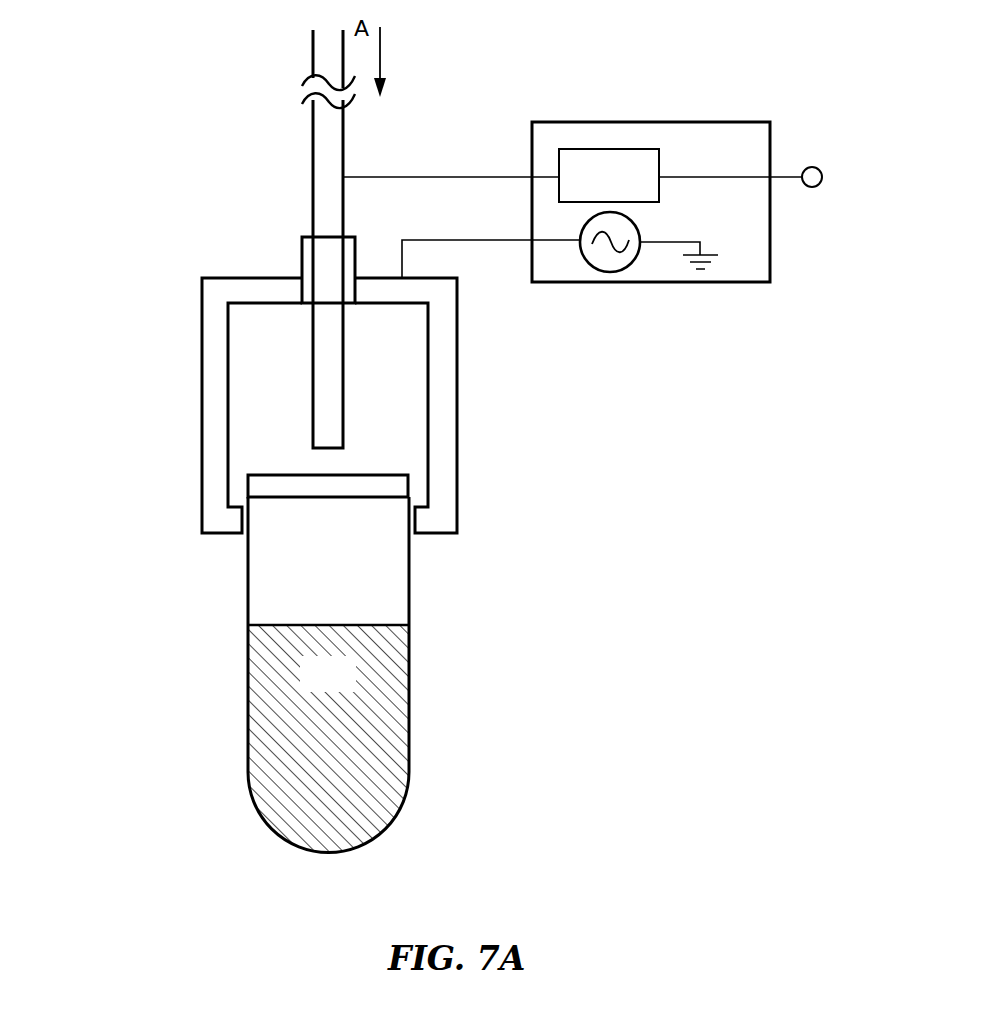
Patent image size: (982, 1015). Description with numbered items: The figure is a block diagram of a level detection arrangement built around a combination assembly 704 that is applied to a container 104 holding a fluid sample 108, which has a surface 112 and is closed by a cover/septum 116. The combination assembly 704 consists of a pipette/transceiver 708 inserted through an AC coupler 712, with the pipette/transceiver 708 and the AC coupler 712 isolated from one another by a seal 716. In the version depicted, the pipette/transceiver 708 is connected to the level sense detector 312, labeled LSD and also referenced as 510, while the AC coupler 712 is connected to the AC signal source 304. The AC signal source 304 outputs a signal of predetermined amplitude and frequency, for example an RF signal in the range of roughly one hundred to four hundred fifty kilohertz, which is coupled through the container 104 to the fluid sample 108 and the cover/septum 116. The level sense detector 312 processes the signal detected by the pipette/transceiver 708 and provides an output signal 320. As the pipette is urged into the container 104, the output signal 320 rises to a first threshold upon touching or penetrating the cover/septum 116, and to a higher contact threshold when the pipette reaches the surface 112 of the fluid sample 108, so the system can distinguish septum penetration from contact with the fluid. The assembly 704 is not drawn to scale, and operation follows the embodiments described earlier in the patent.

The container 104 is at (248, 724).
The fluid sample 108 is at (351, 688).
The surface of the fluid sample 112 is at (273, 622).
The cover/septum 116 is at (275, 475).
The AC signal source 304 is at (635, 219).
The level sense detector 312 is at (609, 148).
The level sensing device (LSD) 510 is at (609, 175).
The output signal 320 is at (814, 188).
The combination assembly 704 is at (172, 313).
The pipette/transceiver 708 is at (343, 405).
The AC coupler 712 is at (202, 400).
The seal 716 is at (302, 257).